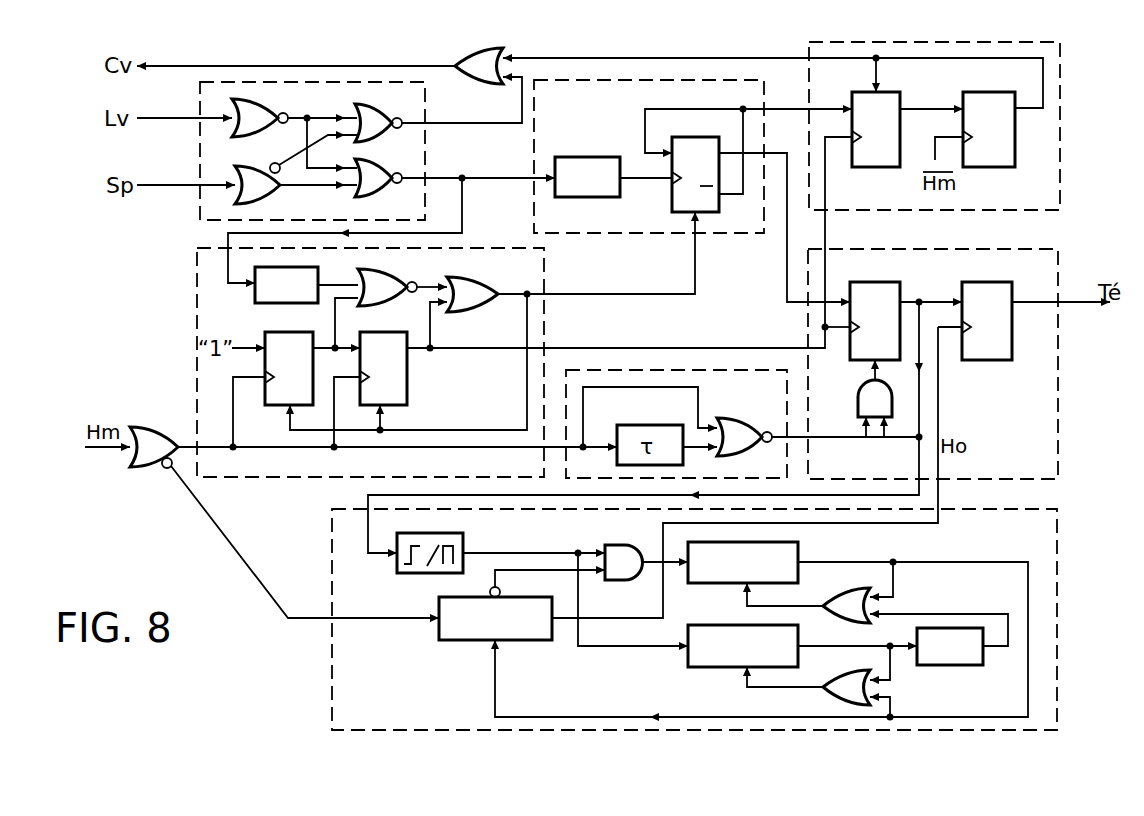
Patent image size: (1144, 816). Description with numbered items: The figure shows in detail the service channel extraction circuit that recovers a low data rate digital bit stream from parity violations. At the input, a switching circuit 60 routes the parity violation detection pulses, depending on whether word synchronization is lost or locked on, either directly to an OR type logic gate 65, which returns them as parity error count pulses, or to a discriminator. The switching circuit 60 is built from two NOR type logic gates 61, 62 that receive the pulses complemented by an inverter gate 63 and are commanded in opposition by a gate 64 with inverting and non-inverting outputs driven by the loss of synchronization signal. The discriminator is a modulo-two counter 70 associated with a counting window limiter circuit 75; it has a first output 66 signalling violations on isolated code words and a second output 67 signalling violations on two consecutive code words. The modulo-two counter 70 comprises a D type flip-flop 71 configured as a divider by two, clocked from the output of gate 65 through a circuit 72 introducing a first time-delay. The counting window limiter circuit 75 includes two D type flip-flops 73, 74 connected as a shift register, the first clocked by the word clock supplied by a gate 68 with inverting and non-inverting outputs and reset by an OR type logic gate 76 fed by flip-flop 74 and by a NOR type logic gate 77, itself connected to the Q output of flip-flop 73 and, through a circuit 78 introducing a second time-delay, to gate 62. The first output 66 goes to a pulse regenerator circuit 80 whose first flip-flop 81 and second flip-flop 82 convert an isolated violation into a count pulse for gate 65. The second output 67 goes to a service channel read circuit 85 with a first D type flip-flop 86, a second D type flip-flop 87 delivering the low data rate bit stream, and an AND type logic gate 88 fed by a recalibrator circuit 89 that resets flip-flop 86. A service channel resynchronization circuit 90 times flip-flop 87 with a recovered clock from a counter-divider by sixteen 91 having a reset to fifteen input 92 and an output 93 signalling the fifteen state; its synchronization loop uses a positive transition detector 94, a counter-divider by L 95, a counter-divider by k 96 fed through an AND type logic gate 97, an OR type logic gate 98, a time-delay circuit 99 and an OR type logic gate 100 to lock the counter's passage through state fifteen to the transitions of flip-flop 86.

The switching circuit 60 is at (200, 204).
The NOR type logic gate 61 is at (372, 115).
The NOR type logic gate 62 is at (372, 184).
The inverter gate 63 is at (262, 112).
The gate with inverting and non-inverting outputs 64 is at (262, 190).
The OR type logic gate 65 is at (483, 76).
The first output 66 is at (797, 108).
The second output 67 is at (787, 304).
The gate with inverting and non-inverting outputs 68 is at (162, 430).
The modulo 2 counter 70 is at (534, 136).
The D type flip-flop 71 is at (672, 205).
The time-delay circuit 72 is at (585, 157).
The first D type flip-flop 73 is at (282, 404).
The second D type flip-flop 74 is at (404, 385).
The counting window limiter circuit 75 is at (197, 302).
The OR type logic gate 76 is at (490, 286).
The NOR type logic gate 77 is at (400, 286).
The time-delay circuit 78 is at (255, 294).
The pulse regenerator circuit 80 is at (1060, 122).
The first flip-flop 81 is at (855, 95).
The second flip-flop 82 is at (965, 95).
The service channel read circuit 85 is at (1058, 256).
The first D type flip-flop 86 is at (897, 287).
The second D type flip-flop 87 is at (1008, 287).
The AND type logic gate 88 is at (866, 398).
The recalibrator circuit 89 is at (605, 370).
The service channel resynchronization circuit 90 is at (332, 545).
The counter-divider by sixteen 91 is at (452, 640).
The reset to 15 input 92 is at (495, 698).
The output signalling the 15 state 93 is at (500, 575).
The positive transition detector 94 is at (465, 548).
The counter-divider by L 95 is at (700, 658).
The counter-divider by k 96 is at (798, 554).
The AND type logic gate 97 is at (618, 556).
The OR type logic gate 98 is at (836, 694).
The time-delay circuit 99 is at (960, 665).
The OR type logic gate 100 is at (848, 600).